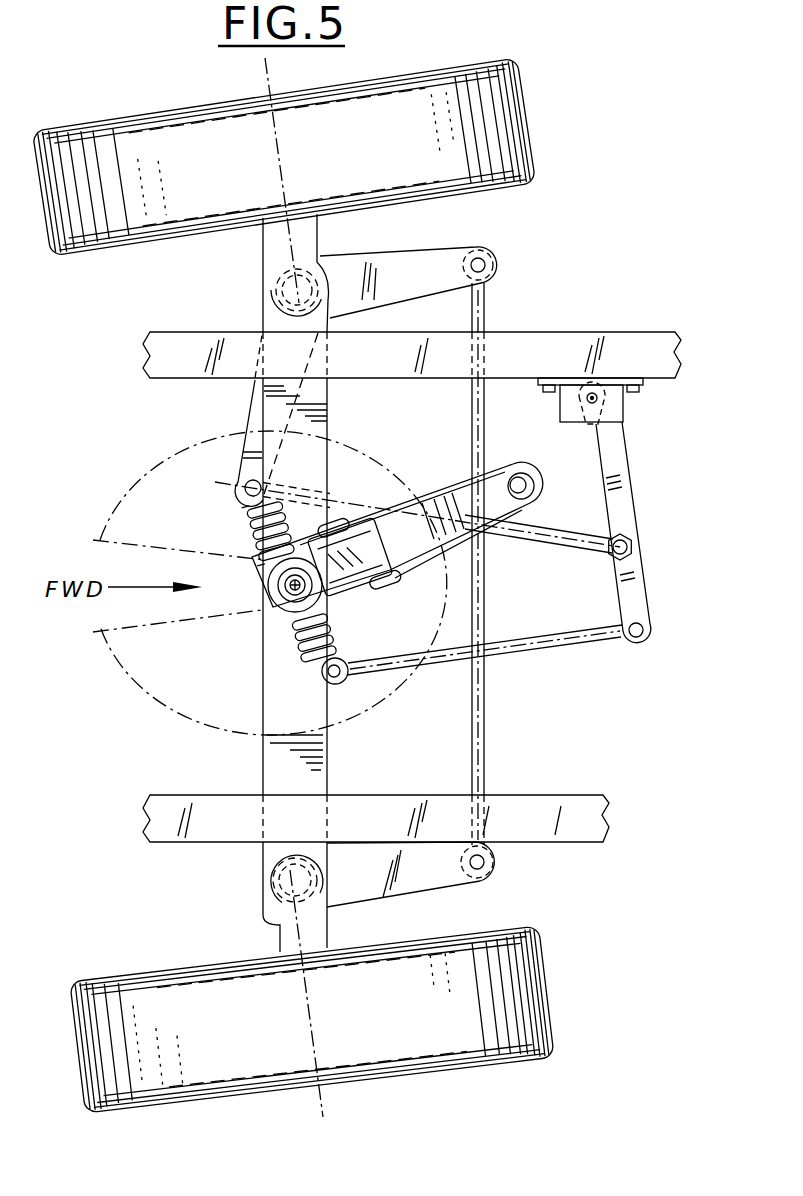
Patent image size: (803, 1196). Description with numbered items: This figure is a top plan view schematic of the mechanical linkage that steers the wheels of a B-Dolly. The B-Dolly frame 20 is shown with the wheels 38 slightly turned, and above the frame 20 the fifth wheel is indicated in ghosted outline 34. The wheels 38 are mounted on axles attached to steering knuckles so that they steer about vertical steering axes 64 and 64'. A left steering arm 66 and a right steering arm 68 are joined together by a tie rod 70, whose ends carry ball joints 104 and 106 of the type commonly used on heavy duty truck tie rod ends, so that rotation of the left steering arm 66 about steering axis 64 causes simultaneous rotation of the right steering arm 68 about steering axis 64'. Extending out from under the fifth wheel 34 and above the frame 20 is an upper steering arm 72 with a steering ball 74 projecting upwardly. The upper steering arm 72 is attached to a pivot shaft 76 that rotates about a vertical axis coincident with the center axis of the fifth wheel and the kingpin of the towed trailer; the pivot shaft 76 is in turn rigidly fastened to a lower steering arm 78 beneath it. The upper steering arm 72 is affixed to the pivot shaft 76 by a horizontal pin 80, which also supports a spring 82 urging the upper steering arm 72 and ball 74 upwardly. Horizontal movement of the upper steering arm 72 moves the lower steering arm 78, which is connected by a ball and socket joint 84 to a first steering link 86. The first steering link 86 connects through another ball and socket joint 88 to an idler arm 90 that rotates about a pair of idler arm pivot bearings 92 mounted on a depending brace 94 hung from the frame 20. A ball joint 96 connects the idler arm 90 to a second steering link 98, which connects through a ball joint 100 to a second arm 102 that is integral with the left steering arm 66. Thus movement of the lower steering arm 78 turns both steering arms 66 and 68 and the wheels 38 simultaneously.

The B-Dolly frame 20 is at (634, 336).
The fifth wheel 34 is at (168, 708).
The B-Dolly wheels 38 is at (408, 80).
The steering axis 64 is at (259, 292).
The steering axis 64' is at (260, 879).
The left steering arm 66 is at (408, 262).
The right steering arm 68 is at (415, 888).
The tie rod 70 is at (486, 720).
The upper steering arm 72 is at (433, 497).
The steering ball 74 is at (530, 487).
The pivot shaft 76 is at (268, 592).
The lower steering arm 78 is at (335, 686).
The horizontal pin 80 is at (255, 522).
The spring 82 is at (382, 598).
The ball and socket joint 84 is at (345, 680).
The first steering link 86 is at (538, 648).
The ball and socket joint 88 is at (648, 635).
The idler arm 90 is at (619, 511).
The idler arm pivot bearings 92 is at (585, 417).
The depending brace 94 is at (624, 403).
The ball joint 96 is at (637, 546).
The second steering link 98 is at (572, 540).
The ball joint 100 is at (246, 491).
The second arm 102 is at (250, 405).
The ball joint 104 is at (489, 264).
The ball joint 106 is at (486, 868).